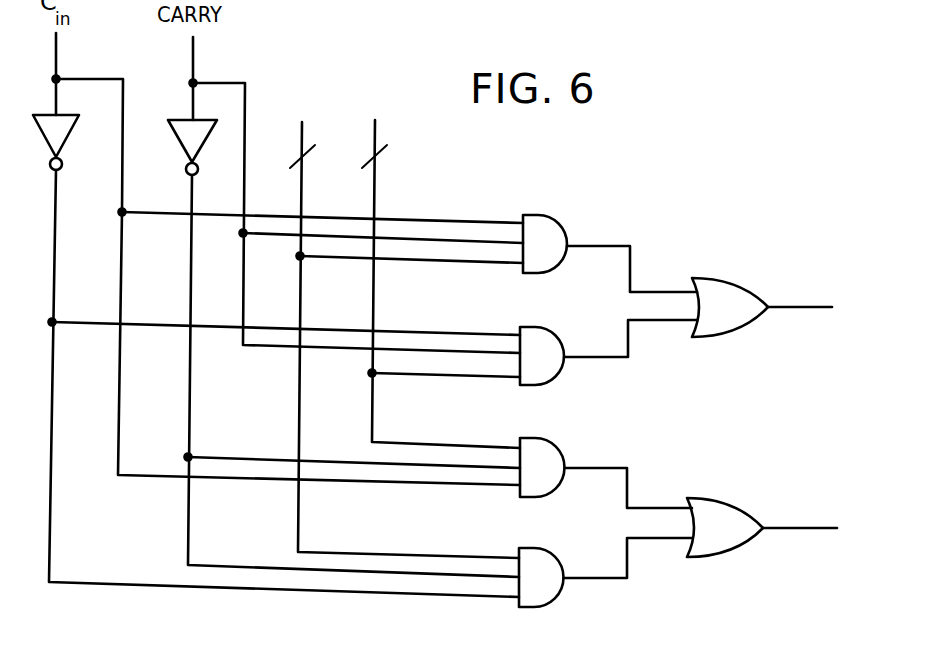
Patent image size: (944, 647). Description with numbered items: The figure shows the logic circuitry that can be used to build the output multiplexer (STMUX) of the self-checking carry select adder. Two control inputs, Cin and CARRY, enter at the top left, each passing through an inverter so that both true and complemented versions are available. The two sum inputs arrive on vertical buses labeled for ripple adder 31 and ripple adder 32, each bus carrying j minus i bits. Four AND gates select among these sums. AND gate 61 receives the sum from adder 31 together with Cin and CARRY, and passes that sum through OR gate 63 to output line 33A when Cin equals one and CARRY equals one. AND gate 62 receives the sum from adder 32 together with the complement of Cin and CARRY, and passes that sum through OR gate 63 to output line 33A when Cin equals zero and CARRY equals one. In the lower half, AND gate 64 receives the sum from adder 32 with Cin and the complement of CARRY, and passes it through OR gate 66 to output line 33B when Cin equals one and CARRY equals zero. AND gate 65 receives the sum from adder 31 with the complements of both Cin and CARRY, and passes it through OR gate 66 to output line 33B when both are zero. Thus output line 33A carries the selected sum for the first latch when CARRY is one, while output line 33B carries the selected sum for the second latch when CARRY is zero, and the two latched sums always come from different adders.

The ripple adder 31 is at (406, 324).
The ripple adder 32 is at (441, 269).
The AND gate 61 is at (543, 227).
The AND gate 62 is at (550, 348).
The OR gate 63 is at (727, 290).
The AND gate 64 is at (555, 461).
The AND gate 65 is at (545, 558).
The OR gate 66 is at (728, 511).
The output line 33A is at (800, 307).
The output line 33B is at (803, 526).